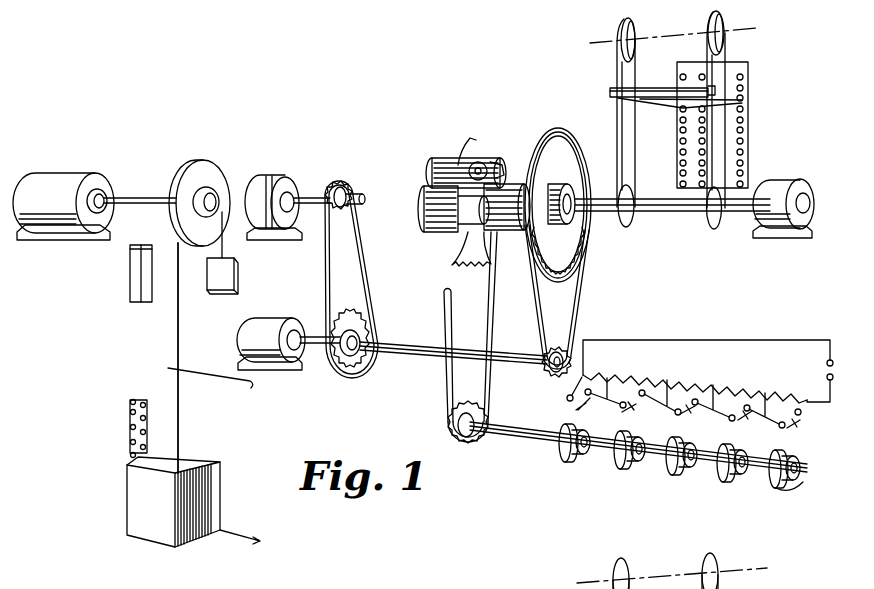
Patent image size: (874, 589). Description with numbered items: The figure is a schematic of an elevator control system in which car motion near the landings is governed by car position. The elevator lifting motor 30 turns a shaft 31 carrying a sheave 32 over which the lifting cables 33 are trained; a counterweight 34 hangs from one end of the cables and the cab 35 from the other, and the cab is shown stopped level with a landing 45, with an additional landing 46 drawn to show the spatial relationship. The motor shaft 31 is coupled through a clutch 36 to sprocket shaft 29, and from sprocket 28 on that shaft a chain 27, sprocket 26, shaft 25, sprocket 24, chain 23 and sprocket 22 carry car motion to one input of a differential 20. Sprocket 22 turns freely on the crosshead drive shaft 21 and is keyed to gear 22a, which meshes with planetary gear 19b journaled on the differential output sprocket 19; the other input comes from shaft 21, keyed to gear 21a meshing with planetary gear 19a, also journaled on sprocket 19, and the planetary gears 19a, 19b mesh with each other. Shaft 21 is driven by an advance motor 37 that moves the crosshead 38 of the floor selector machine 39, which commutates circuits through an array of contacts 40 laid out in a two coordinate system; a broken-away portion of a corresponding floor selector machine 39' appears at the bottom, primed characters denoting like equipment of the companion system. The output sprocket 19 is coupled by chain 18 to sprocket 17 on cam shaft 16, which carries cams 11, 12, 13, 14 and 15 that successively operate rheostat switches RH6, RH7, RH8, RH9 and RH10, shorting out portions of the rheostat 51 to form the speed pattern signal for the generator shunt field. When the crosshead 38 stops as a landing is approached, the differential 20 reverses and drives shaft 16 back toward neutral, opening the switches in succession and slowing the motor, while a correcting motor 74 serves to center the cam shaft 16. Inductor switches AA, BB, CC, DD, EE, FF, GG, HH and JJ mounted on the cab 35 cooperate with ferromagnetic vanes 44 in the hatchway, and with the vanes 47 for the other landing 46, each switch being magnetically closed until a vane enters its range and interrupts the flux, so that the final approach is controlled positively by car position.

The cam 11 is at (577, 457).
The cam 12 is at (630, 471).
The cam 13 is at (683, 478).
The cam 14 is at (735, 486).
The cam 15 is at (789, 488).
The cam shaft 16 is at (528, 421).
The sprocket 17 is at (474, 402).
The chain 18 is at (444, 294).
The differential output sprocket 19 is at (478, 265).
The planetary gear 19a is at (437, 162).
The planetary gear 19b is at (512, 150).
The differential 20 is at (460, 200).
The crosshead drive shaft 21 is at (668, 213).
The gear 21a is at (432, 231).
The sprocket 22 is at (572, 158).
The gear 22a is at (507, 236).
The chain 23 is at (597, 279).
The sprocket 24 is at (558, 346).
The shaft 25 is at (527, 352).
The sprocket 26 is at (352, 314).
The chain 27 is at (370, 256).
The sprocket 28 is at (348, 186).
The sprocket shaft 29 is at (315, 197).
The elevator lifting motor 30 is at (60, 176).
The motor shaft 31 is at (148, 197).
The sheave 32 is at (196, 166).
The elevator lifting cables 33 is at (178, 307).
The counterweight 34 is at (238, 268).
The cab 35 is at (158, 538).
The clutch 36 is at (283, 172).
The advance motor 37 is at (776, 182).
The crosshead 38 is at (610, 92).
The floor selector machine 39 is at (673, 120).
The spool 39' is at (672, 568).
The array of contacts 40 is at (749, 93).
The ferromagnetic vanes 44 is at (140, 400).
The landing 45 is at (253, 542).
The additional landing 46 is at (223, 383).
The vanes 47 is at (135, 270).
The rheostat 51 is at (727, 381).
The correcting motor 74 is at (292, 318).
The rheostat switch RH6 is at (559, 393).
The rheostat switch RH7 is at (610, 401).
The rheostat switch RH8 is at (667, 409).
The rheostat switch RH9 is at (722, 411).
The rheostat switch RH10 is at (773, 419).
The inductor switch AA is at (130, 402).
The inductor switch BB is at (130, 412).
The inductor switch CC is at (164, 415).
The inductor switch DD is at (130, 427).
The inductor switch EE is at (160, 448).
The inductor switch FF is at (146, 405).
The inductor switch GG is at (162, 432).
The inductor switch HH is at (130, 442).
The inductor switch JJ is at (130, 455).